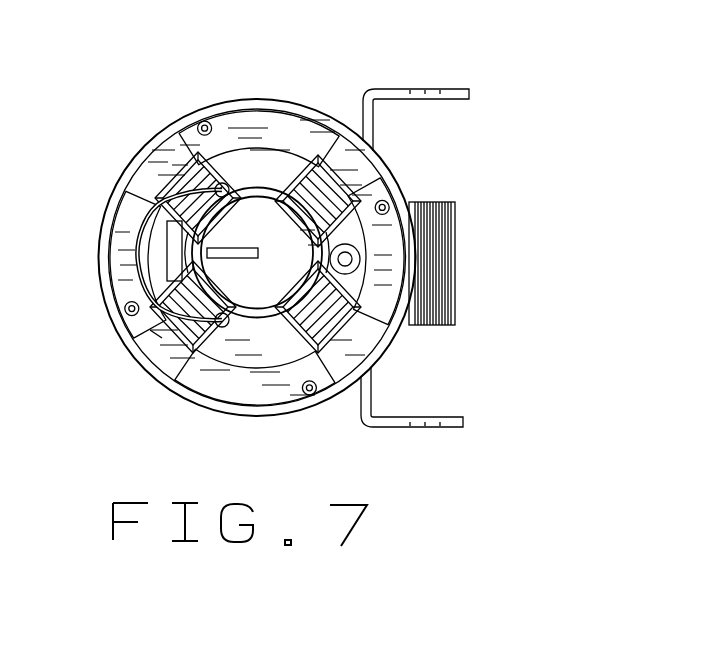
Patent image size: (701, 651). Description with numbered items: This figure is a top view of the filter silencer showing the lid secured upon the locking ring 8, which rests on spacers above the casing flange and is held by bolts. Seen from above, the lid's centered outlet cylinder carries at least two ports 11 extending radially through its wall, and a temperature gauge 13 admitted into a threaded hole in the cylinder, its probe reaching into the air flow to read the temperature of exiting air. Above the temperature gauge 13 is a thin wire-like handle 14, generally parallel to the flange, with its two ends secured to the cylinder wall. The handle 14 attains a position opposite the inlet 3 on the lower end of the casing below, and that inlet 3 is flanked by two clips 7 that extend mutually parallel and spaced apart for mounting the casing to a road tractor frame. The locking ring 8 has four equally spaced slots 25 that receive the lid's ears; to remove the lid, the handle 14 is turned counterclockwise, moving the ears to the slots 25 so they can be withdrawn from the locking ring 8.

The inlet 3 is at (455, 250).
The clip 7 is at (432, 89).
The locking ring 8 is at (234, 238).
The ports 11 is at (337, 278).
The temperature gauge 13 is at (152, 336).
The handle 14 is at (152, 193).
The slots 25 is at (120, 229).